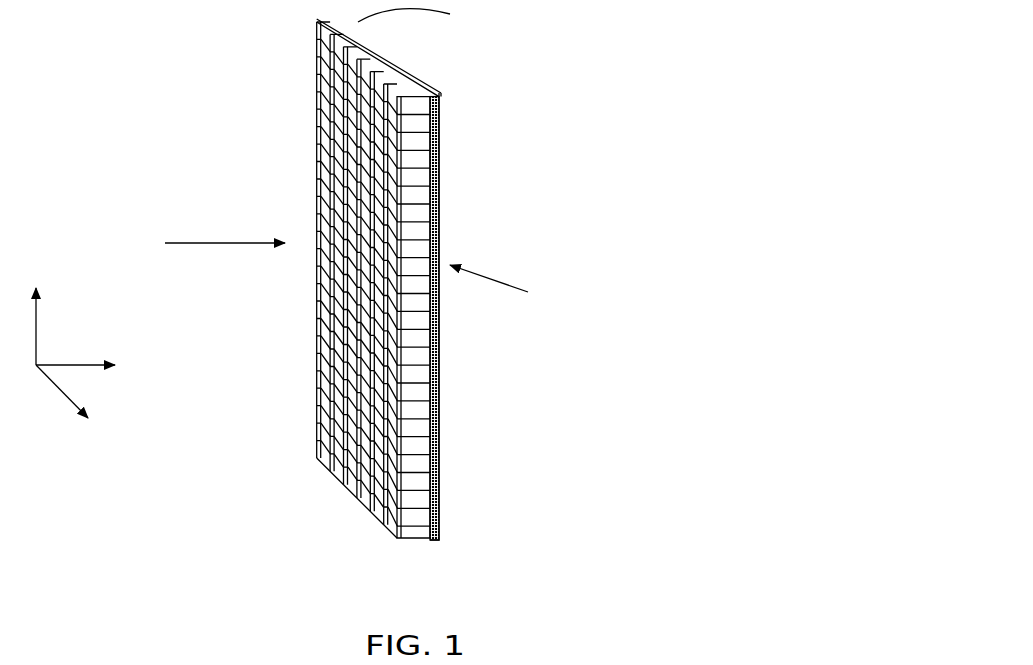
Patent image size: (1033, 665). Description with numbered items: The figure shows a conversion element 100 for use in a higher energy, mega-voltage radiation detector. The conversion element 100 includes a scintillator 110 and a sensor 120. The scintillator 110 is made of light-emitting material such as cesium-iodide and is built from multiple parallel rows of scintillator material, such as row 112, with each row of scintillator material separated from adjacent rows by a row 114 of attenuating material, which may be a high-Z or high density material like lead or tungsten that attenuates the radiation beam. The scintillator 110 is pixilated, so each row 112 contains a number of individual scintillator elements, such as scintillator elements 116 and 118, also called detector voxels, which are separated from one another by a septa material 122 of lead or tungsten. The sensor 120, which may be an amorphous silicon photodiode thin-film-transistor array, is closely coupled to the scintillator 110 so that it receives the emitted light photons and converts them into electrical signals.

The conversion element 100 is at (216, 160).
The scintillator 110 is at (425, 543).
The row 112 is at (410, 545).
The row of attenuating material 114 is at (380, 527).
The scintillator element 116 is at (420, 422).
The scintillator element 118 is at (423, 443).
The sensor 120 is at (442, 213).
The septa material 122 is at (417, 395).